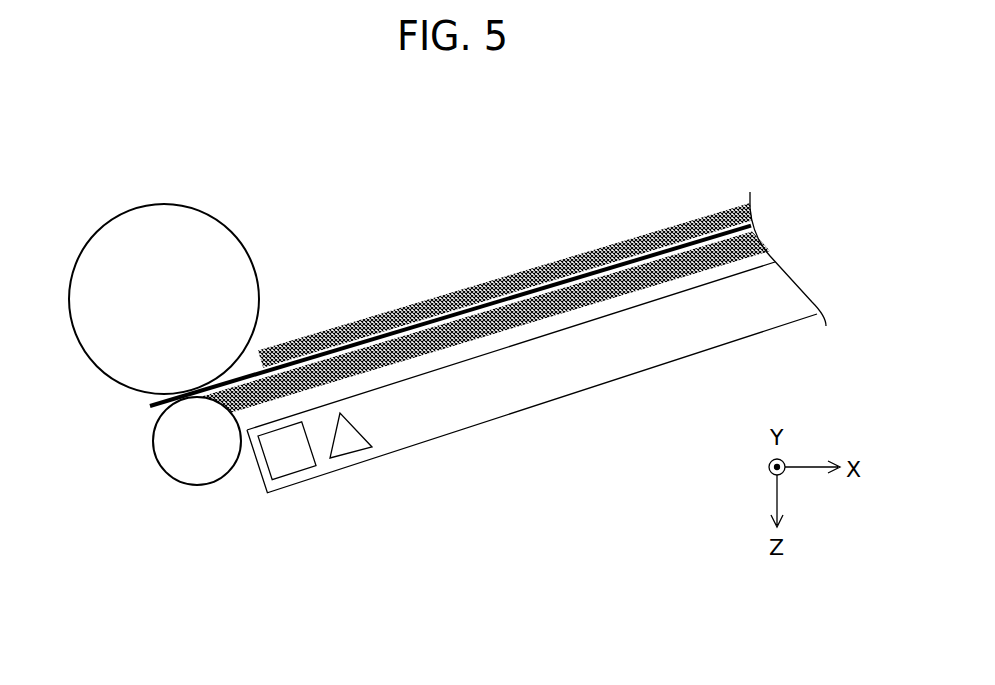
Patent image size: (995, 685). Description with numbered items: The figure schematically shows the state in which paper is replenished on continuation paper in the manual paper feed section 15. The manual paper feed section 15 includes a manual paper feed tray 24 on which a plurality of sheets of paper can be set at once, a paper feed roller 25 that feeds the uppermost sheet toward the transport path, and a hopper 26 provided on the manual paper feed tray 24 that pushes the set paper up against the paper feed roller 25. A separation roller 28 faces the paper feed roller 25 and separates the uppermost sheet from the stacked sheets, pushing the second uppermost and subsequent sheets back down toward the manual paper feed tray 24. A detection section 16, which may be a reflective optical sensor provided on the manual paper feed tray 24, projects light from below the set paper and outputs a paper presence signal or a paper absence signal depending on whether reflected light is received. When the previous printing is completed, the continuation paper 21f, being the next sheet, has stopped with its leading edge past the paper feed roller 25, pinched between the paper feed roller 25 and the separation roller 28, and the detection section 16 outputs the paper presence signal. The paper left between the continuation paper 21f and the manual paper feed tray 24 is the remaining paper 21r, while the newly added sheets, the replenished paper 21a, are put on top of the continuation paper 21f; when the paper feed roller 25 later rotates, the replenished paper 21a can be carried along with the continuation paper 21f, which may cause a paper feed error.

The manual paper feed section 15 is at (252, 144).
The paper feed roller 25 is at (212, 216).
The separation roller 28 is at (198, 486).
The manual paper feed tray 24 is at (703, 352).
The replenished paper 21a is at (421, 301).
The remaining paper 21r is at (476, 348).
The continuation paper 21f is at (155, 411).
The hopper 26 is at (295, 474).
The detection section 16 is at (352, 455).